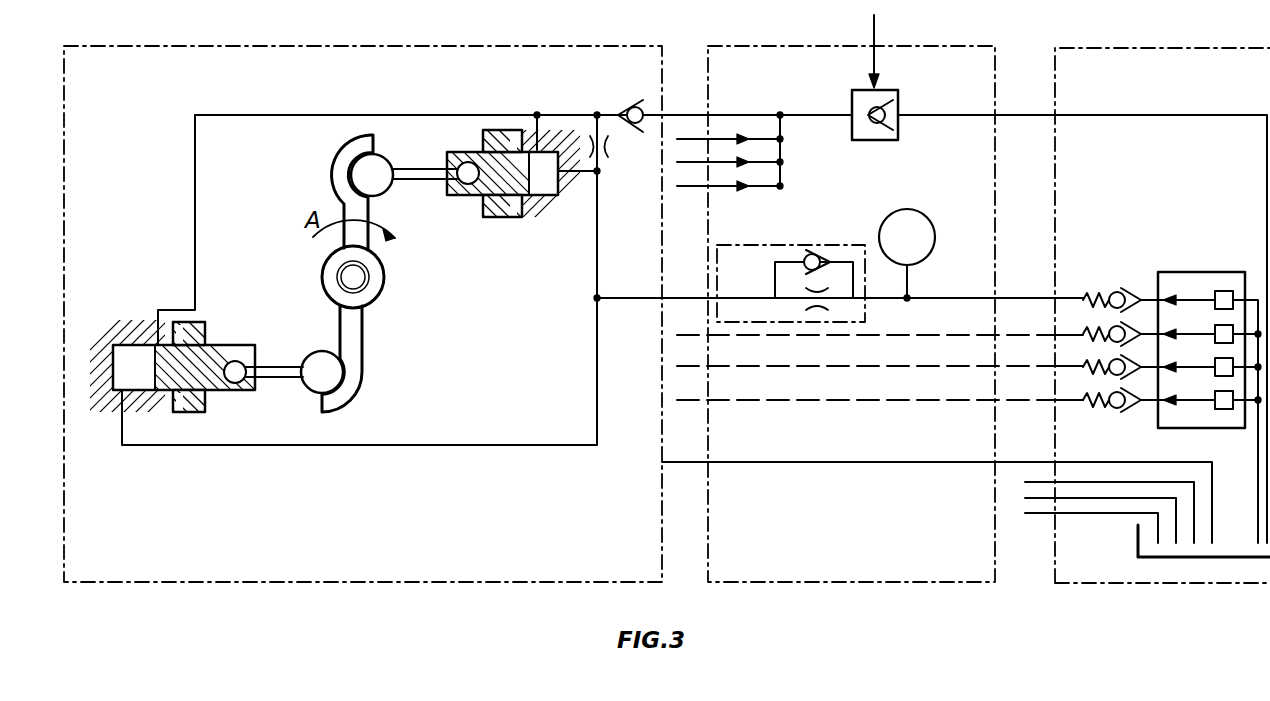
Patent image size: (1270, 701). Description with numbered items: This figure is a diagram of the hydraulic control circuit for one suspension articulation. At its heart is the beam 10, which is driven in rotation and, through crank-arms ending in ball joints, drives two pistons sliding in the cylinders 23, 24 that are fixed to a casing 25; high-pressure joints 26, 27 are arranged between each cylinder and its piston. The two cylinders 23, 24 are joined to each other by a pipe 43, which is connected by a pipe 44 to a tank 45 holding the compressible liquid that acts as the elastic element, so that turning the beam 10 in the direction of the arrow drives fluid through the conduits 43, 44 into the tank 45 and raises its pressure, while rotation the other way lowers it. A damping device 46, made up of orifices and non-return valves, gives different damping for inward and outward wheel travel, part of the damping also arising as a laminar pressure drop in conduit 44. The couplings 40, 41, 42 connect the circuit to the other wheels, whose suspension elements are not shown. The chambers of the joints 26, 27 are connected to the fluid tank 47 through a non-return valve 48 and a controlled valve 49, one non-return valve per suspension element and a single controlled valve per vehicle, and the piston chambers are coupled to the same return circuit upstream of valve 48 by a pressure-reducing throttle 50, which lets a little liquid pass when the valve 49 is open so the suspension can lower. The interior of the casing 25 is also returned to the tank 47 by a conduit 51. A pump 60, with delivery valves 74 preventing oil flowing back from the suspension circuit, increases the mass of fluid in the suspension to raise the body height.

The beam 10 is at (353, 328).
The cylinder 23 is at (552, 200).
The cylinder 24 is at (108, 400).
The casing 25 is at (527, 584).
The joint 26 is at (205, 330).
The joint 27 is at (492, 218).
The coupling 40 is at (676, 130).
The coupling 41 is at (676, 325).
The coupling 42 is at (1026, 472).
The pipe 43 is at (481, 445).
The pipe 44 is at (684, 296).
The tank 45 is at (933, 236).
The damping device 46 is at (757, 245).
The fluid tank 47 is at (1148, 542).
The non-return valve 48 is at (630, 105).
The controlled valve 49 is at (900, 100).
The pressure-reducing throttle 50 is at (608, 147).
The conduit 51 is at (687, 463).
The pump 60 is at (1090, 575).
The delivery valve 74 is at (1119, 291).